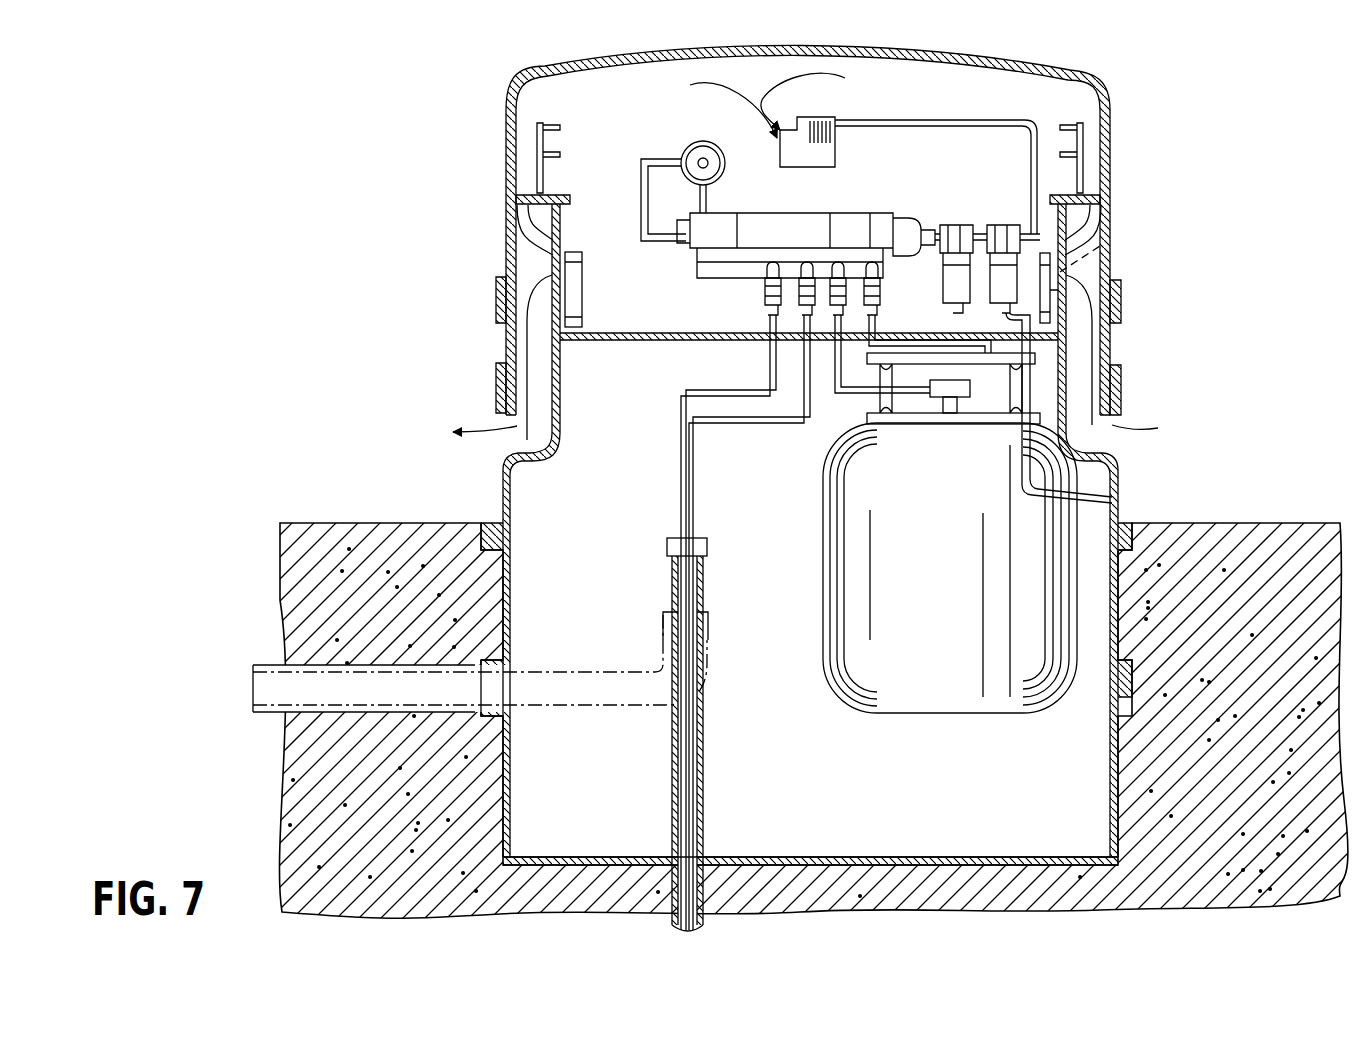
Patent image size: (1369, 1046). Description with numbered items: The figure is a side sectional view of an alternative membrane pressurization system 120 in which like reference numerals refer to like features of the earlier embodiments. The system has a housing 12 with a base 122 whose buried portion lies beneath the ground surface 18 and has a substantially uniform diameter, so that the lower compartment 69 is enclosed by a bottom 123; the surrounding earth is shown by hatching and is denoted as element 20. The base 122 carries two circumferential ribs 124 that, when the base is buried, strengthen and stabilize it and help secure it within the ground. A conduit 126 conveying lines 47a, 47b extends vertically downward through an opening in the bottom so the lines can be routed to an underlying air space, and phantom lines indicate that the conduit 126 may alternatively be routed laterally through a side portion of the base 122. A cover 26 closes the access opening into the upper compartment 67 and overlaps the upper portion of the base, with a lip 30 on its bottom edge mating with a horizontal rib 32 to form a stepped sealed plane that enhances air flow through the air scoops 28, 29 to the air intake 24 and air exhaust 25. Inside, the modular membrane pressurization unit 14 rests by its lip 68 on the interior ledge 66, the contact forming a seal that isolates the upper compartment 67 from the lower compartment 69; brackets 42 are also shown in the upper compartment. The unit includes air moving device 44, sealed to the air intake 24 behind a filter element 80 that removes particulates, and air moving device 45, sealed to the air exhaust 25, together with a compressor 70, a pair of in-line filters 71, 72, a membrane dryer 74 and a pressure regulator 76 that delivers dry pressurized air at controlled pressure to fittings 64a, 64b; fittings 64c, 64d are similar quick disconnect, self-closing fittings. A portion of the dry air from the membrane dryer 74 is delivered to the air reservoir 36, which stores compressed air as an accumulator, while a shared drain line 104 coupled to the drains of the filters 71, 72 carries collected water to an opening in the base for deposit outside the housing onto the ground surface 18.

The housing 12 is at (1150, 481).
The modular membrane pressurization unit 14 is at (646, 128).
The ground surface 18 is at (1262, 524).
The ground 20 is at (1232, 758).
The air intake 24 is at (1067, 277).
The air exhaust 25 is at (528, 268).
The cover 26 is at (1103, 80).
The air scoop 28 is at (1102, 348).
The air scoop 29 is at (522, 338).
The lip 30 is at (503, 420).
The horizontal rib 32 is at (503, 383).
The air reservoir 36 is at (937, 548).
The mounting bracket 42 is at (537, 135).
The air moving device 44 is at (1040, 255).
The air moving device 45 is at (578, 290).
The line 47a is at (681, 470).
The line 47b is at (693, 505).
The fitting 64a is at (765, 290).
The fitting 64b is at (799, 303).
The fitting 64c is at (834, 322).
The fitting 64d is at (878, 305).
The interior ledge 66 is at (1108, 200).
The upper compartment 67 is at (936, 177).
The lip 68 is at (560, 197).
The lower compartment 69 is at (480, 622).
The compressor 70 is at (838, 160).
The in-line filter 71 is at (955, 225).
The in-line filter 72 is at (1000, 225).
The membrane dryer 74 is at (880, 213).
The pressure regulator 76 is at (695, 142).
The filter element 80 is at (1103, 246).
The shared drain line 104 is at (1027, 457).
The membrane pressurization system 120 is at (370, 140).
The base 122 is at (1128, 608).
The bottom 123 is at (978, 860).
The circumferential rib 124 is at (495, 525).
The conduit 126 is at (672, 592).